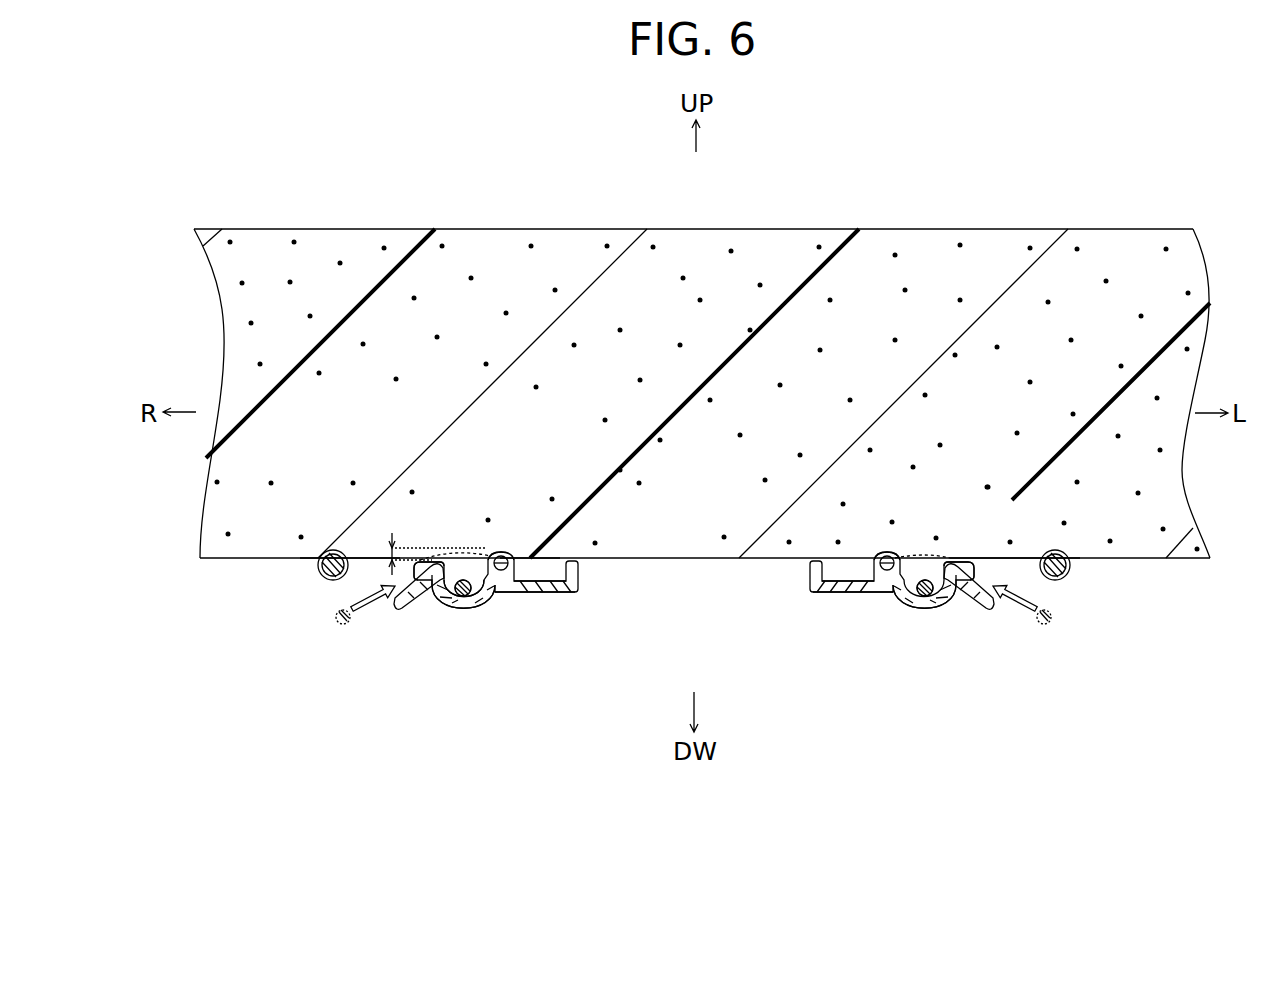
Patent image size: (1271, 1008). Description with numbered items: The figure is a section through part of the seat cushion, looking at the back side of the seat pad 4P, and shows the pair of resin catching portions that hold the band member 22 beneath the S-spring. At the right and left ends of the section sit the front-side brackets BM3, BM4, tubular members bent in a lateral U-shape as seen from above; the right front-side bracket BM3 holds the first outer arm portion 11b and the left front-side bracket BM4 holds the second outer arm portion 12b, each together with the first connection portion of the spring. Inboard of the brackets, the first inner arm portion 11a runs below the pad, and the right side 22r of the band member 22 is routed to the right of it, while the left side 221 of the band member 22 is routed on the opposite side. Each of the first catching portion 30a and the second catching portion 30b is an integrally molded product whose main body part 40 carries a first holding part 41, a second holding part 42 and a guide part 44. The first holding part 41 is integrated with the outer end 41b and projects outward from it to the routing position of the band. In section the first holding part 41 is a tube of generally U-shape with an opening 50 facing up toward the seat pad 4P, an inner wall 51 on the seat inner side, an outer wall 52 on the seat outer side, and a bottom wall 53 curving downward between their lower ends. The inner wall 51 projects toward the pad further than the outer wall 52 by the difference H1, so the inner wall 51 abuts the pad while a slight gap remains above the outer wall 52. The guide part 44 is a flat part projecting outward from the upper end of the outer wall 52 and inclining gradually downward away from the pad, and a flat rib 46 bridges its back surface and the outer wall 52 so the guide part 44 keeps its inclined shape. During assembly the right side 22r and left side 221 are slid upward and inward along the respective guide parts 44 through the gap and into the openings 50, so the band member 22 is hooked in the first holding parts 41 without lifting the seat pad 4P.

The seat pad 4P is at (760, 268).
The front-side bracket BM3 is at (318, 571).
The front-side bracket BM4 is at (1070, 572).
The first inner arm portion 11a is at (500, 556).
The first outer arm portion 11b is at (338, 575).
The second outer arm portion 12b is at (1068, 578).
The band member 22 is at (333, 623).
The right side of band member 22r is at (458, 579).
The left side of band member 221 is at (933, 562).
The first catching portion 30a is at (477, 593).
The second catching portion 30b is at (911, 593).
The main body part 40 is at (870, 556).
The first holding part 41 is at (517, 706).
The outer end 41b is at (515, 556).
The second holding part 42 is at (535, 601).
The guide part 44 is at (393, 594).
The rib 46 is at (427, 585).
The opening 50 is at (472, 549).
The inner wall 51 is at (480, 605).
The outer wall 52 is at (447, 610).
The bottom wall 53 is at (472, 605).
The difference in projecting dimension H1 is at (419, 554).